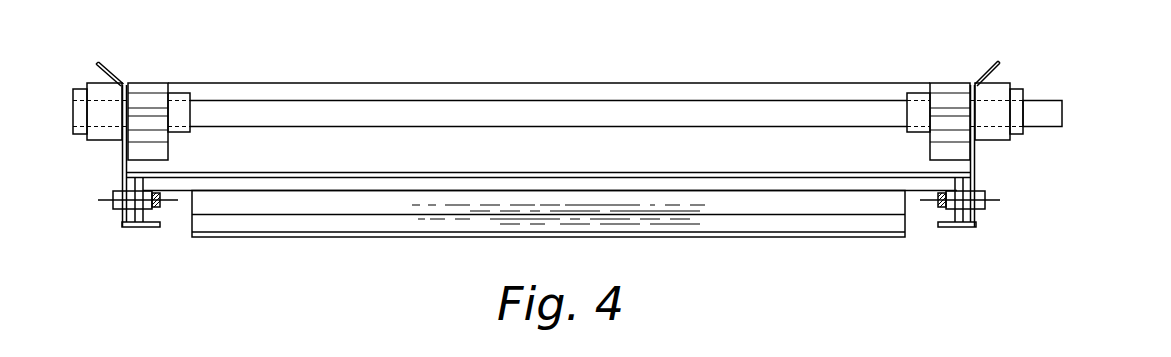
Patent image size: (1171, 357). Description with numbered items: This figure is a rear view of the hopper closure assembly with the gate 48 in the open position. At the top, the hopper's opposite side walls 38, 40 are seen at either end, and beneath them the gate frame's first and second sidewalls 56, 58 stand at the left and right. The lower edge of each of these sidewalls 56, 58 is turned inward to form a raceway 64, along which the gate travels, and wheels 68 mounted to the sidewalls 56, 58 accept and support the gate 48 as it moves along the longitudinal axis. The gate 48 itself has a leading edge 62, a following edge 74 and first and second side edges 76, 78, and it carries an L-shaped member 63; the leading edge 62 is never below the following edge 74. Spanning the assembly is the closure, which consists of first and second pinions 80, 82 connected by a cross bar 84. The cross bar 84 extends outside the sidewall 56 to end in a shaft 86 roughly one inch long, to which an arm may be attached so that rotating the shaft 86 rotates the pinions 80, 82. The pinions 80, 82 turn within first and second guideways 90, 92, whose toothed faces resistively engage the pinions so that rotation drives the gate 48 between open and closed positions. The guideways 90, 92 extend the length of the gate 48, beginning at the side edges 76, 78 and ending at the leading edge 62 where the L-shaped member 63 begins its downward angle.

The side wall 38 is at (990, 72).
The side wall 40 is at (104, 68).
The gate 48 is at (630, 160).
The first sidewall 56 is at (978, 165).
The second sidewall 58 is at (125, 165).
The leading edge 62 is at (335, 190).
The L-shaped member 63 is at (745, 225).
The raceway 64 is at (152, 216).
The wheel 68 is at (136, 212).
The following edge 74 is at (862, 172).
The first side edge 76 is at (975, 177).
The second side edge 78 is at (122, 176).
The first pinion 80 is at (950, 90).
The second pinion 82 is at (150, 88).
The cross bar 84 is at (715, 100).
The shaft 86 is at (1065, 112).
The first guideway 90 is at (938, 152).
The second guideway 92 is at (160, 152).